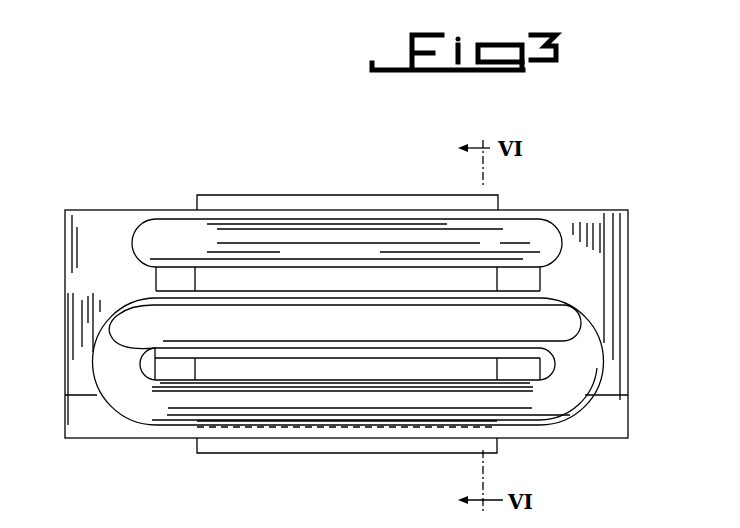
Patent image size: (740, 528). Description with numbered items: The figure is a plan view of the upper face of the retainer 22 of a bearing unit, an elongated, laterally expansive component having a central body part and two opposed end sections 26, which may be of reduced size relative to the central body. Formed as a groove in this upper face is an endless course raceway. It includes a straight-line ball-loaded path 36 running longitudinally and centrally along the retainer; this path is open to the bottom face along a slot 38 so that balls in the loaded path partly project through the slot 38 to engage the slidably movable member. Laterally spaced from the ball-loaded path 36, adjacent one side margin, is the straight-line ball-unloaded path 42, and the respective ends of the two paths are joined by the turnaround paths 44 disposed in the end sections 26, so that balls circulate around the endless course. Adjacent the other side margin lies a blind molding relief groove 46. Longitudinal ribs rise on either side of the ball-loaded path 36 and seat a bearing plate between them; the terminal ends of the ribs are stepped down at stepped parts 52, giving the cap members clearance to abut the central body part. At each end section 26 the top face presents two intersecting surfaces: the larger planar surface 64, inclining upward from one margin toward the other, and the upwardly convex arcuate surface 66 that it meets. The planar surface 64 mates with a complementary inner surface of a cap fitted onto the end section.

The retainer 22 is at (310, 182).
The end sections 26 is at (100, 210).
The ball-loaded path 36 is at (158, 330).
The slot 38 is at (222, 318).
The ball-unloaded path 42 is at (238, 407).
The turnaround paths 44 is at (105, 370).
The blind molding relief groove 46 is at (382, 238).
The stepped parts of the ribs 52 is at (167, 290).
The planar surface 64 is at (122, 281).
The arcuate surface 66 is at (110, 428).